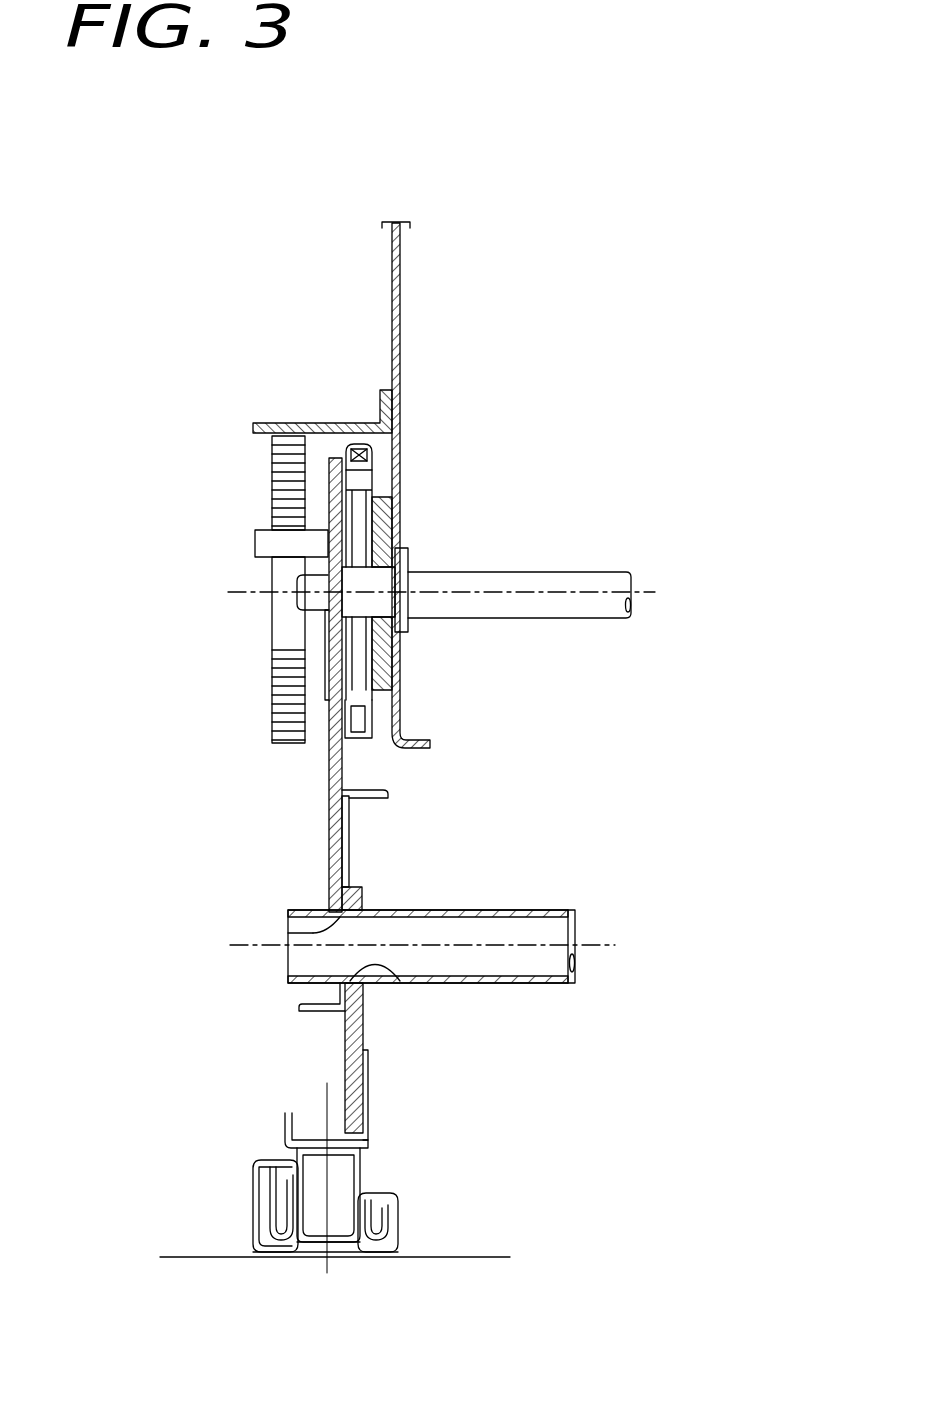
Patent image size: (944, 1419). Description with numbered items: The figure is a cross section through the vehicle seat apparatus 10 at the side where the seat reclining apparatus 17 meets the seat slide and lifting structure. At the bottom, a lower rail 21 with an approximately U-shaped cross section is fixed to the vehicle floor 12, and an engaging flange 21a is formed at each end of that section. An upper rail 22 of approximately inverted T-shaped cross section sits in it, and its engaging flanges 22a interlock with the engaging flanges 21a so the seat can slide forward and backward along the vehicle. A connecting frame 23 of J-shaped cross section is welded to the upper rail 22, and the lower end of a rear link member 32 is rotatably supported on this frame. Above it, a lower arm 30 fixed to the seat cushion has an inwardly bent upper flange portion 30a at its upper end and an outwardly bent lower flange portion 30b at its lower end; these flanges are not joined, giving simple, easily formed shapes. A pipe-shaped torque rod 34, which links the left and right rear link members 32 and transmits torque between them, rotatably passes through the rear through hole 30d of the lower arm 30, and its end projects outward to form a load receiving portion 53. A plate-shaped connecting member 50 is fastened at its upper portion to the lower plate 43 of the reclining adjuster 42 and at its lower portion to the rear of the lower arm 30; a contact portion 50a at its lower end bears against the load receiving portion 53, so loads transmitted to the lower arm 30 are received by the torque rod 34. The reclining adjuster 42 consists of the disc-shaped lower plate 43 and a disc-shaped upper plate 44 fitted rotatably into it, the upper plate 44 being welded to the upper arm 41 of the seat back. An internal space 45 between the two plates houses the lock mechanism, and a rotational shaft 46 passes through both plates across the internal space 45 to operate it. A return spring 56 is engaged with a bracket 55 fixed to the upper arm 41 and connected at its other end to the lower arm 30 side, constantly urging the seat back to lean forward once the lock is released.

The vehicle seat apparatus 10 is at (340, 312).
The vehicle floor 12 is at (208, 1255).
The seat reclining apparatus 17 is at (440, 461).
The lower rail 21 is at (257, 1210).
The engaging flange 21a is at (373, 1197).
The upper rail 22 is at (360, 1177).
The engaging flange 22a is at (377, 1240).
The connecting frame 23 is at (375, 1083).
The lower arm 30 is at (345, 832).
The upper flange portion 30a is at (373, 797).
The lower flange portion 30b is at (322, 1013).
The rear through hole 30d is at (385, 978).
The rear link member 32 is at (350, 1065).
The torque rod 34 is at (517, 910).
The upper arm 41 is at (400, 301).
The reclining adjuster 42 is at (314, 466).
The lower plate 43 is at (333, 690).
The upper plate 44 is at (387, 522).
The internal space 45 is at (355, 660).
The rotational shaft 46 is at (565, 572).
The connecting member 50 is at (337, 770).
The contact portion 50a is at (287, 932).
The load receiving portion 53 is at (315, 908).
The bracket 55 is at (318, 421).
The return spring 56 is at (277, 673).